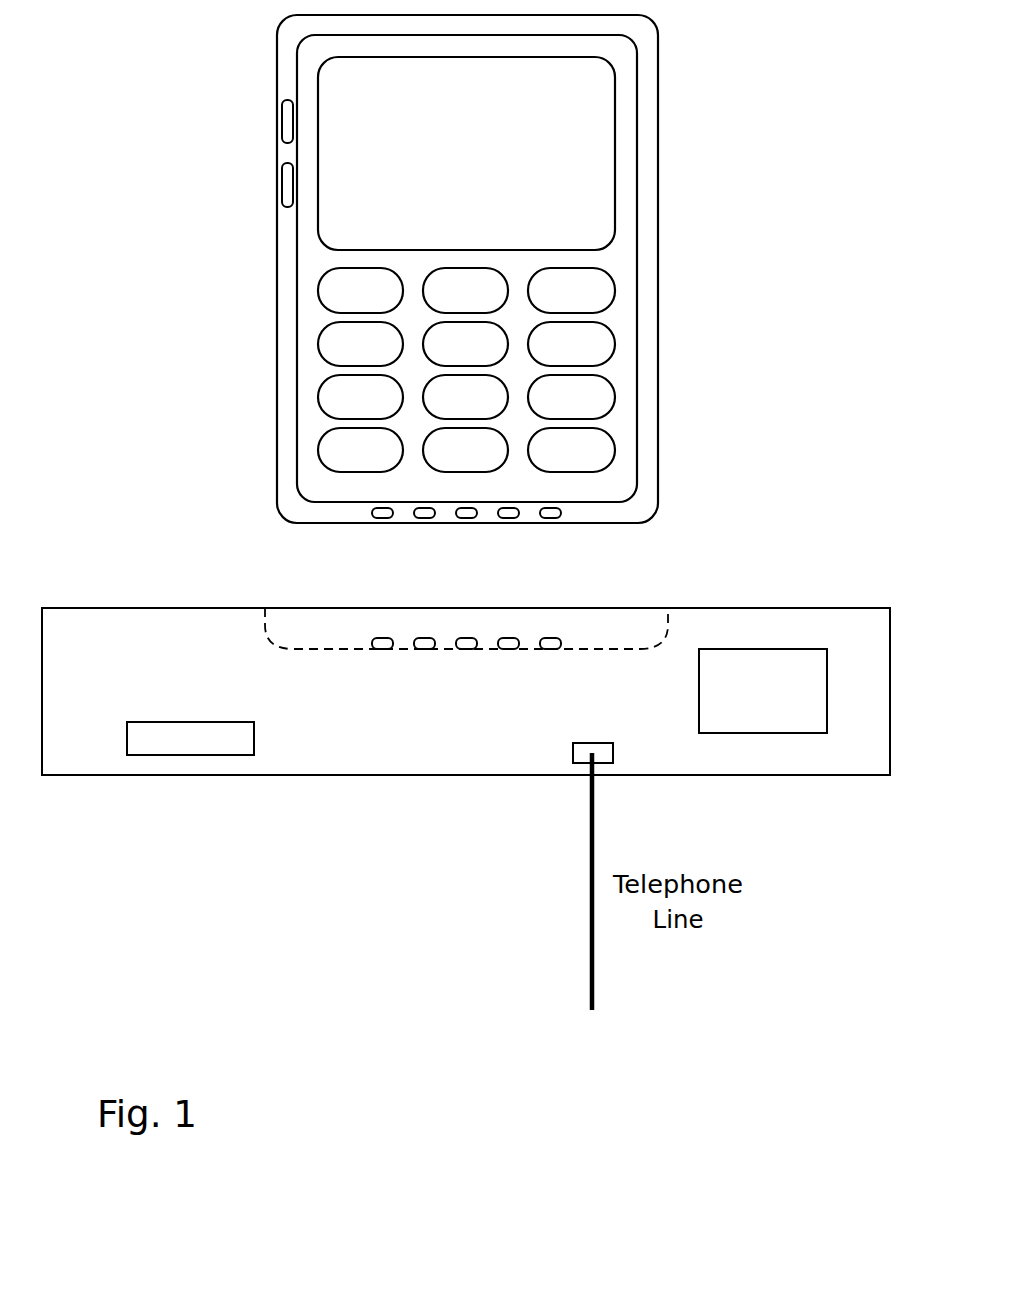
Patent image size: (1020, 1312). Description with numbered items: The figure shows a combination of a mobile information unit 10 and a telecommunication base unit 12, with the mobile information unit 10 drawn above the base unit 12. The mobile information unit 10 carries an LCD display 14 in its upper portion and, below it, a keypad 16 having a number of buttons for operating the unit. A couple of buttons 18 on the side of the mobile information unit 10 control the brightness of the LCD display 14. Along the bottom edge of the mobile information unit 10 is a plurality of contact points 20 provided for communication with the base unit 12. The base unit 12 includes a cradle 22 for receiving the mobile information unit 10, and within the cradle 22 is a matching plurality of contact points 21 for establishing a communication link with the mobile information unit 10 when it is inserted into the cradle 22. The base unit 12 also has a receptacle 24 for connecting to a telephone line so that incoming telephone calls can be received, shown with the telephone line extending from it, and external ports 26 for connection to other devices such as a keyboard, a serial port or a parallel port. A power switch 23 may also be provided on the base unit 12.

The mobile information unit 10 is at (658, 448).
The telecommunication base unit 12 is at (137, 775).
The LCD display 14 is at (615, 185).
The keypad 16 is at (613, 367).
The buttons 18 is at (255, 207).
The contact points 20 is at (562, 535).
The contact points 21 is at (562, 660).
The cradle 22 is at (637, 608).
The power switch 23 is at (714, 733).
The receptacle for telephone line 24 is at (593, 743).
The external ports 26 is at (168, 722).